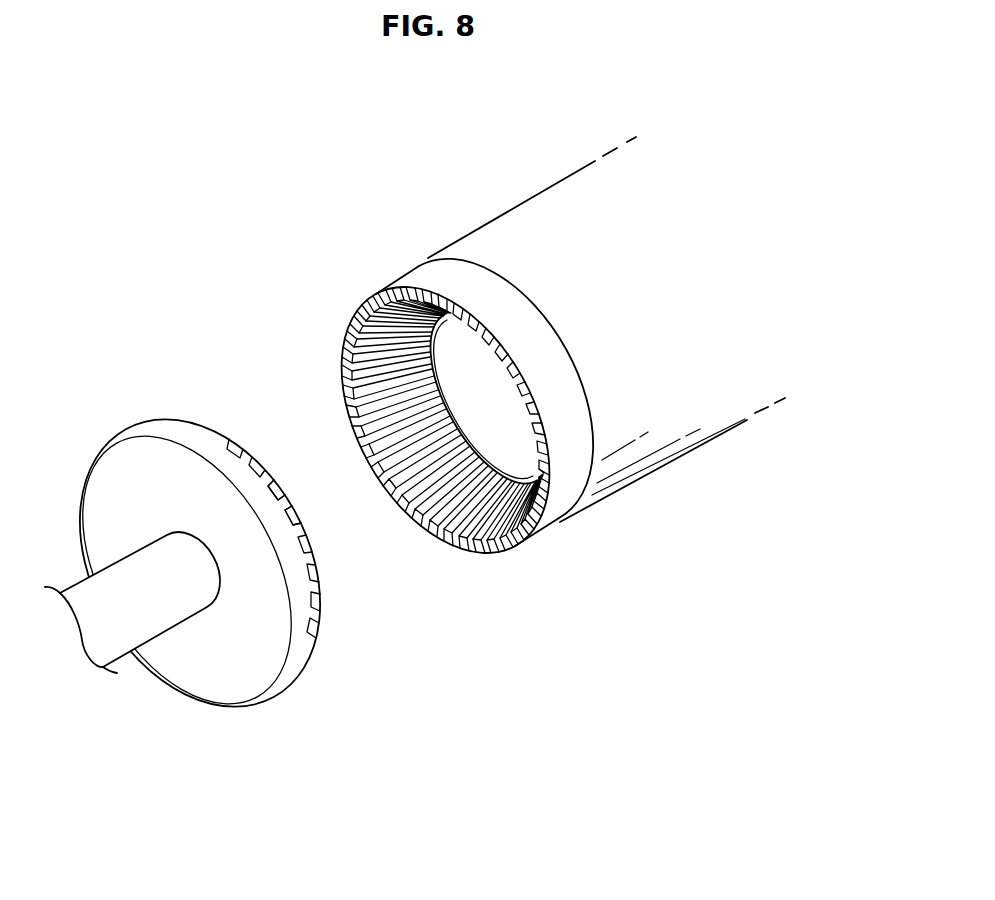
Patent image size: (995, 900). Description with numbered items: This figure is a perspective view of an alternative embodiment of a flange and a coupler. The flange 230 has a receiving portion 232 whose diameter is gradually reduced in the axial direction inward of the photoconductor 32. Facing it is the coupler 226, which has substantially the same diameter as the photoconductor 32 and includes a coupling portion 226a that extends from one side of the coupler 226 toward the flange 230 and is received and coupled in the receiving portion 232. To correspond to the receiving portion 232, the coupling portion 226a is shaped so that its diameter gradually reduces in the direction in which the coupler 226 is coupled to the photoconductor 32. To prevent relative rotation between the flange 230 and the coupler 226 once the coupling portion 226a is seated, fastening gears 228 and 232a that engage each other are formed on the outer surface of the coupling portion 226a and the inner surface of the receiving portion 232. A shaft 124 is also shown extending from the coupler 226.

The photoconductor 32 is at (532, 233).
The drive shaft 124 is at (165, 618).
The coupler 226 is at (250, 680).
The coupling portion 226a is at (287, 490).
The fastening gear 228 is at (265, 460).
The flange 230 is at (415, 278).
The receiving portion 232 is at (498, 412).
The fastening gear 232a is at (405, 500).